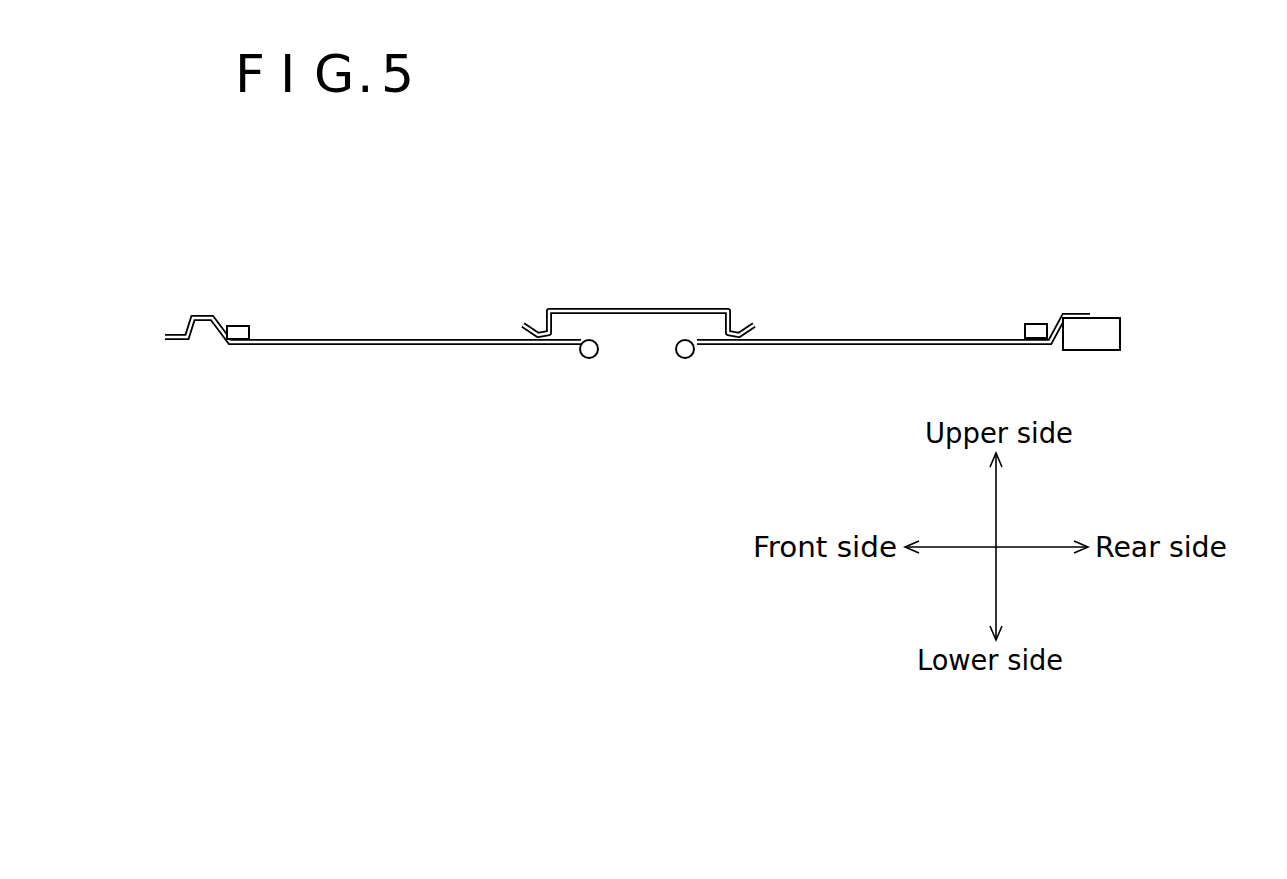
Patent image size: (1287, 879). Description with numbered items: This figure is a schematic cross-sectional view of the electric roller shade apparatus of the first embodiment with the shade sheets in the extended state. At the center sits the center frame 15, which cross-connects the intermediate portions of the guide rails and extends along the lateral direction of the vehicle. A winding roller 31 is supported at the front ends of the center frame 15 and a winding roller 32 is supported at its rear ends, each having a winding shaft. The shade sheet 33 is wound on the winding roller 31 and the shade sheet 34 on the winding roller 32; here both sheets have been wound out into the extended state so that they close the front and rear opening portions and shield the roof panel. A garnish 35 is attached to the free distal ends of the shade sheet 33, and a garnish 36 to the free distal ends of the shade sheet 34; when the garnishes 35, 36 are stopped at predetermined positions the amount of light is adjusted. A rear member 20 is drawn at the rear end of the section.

The center frame 15 is at (640, 308).
The rear member 20 is at (1095, 338).
The winding roller 31 is at (590, 350).
The winding roller 32 is at (685, 350).
The shade sheet 33 is at (388, 345).
The shade sheet 34 is at (877, 345).
The garnish 35 is at (237, 327).
The garnish 36 is at (1038, 326).